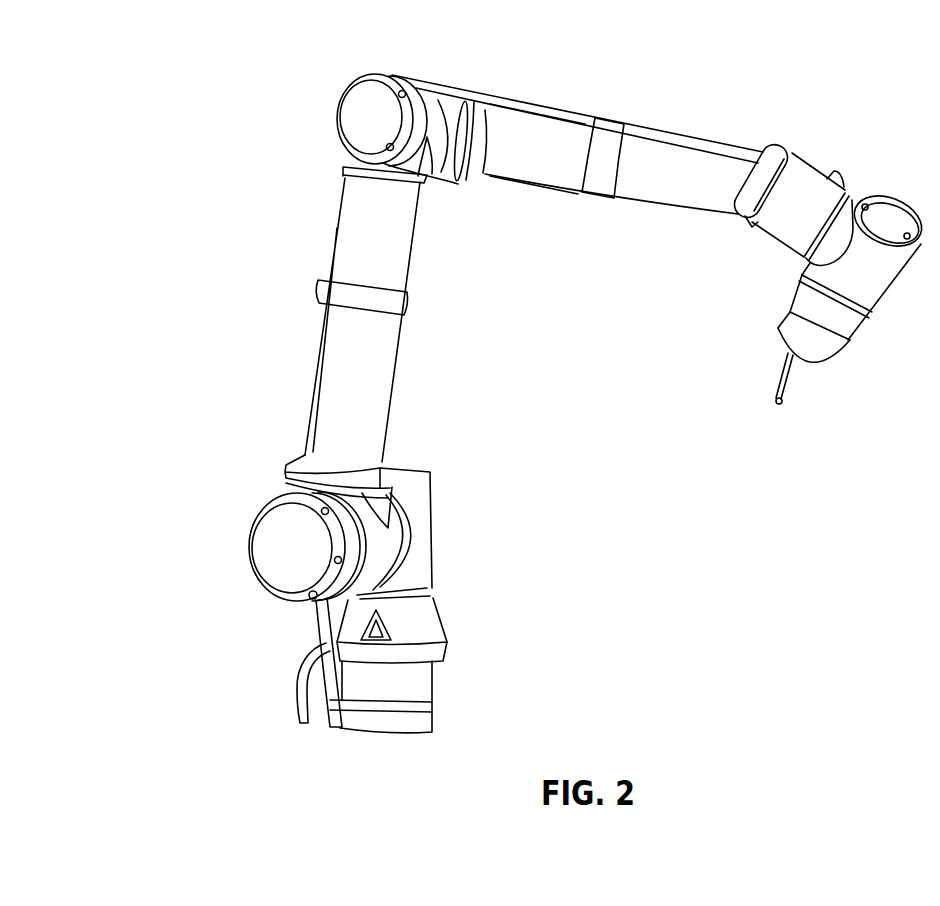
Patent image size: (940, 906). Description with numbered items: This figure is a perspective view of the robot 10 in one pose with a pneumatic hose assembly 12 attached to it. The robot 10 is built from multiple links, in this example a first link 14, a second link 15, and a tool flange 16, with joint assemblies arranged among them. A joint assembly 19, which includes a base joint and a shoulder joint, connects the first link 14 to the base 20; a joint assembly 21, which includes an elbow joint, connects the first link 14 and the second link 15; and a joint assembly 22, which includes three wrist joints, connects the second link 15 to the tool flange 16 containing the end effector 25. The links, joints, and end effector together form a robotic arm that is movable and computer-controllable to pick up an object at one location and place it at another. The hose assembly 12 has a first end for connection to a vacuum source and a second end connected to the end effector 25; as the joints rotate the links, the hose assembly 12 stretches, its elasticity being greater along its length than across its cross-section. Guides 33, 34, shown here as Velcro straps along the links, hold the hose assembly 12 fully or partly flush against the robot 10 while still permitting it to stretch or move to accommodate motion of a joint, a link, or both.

The robot 10 is at (757, 93).
The hose assembly 12 is at (493, 95).
The first link 14 is at (390, 397).
The second link 15 is at (532, 167).
The tool flange 16 is at (846, 325).
The joint assembly 19 is at (250, 548).
The base 20 is at (447, 641).
The joint assembly 21 is at (345, 120).
The joint assembly 22 is at (800, 160).
The end effector 25 is at (822, 363).
The guide 33 is at (318, 288).
The guide 34 is at (592, 197).